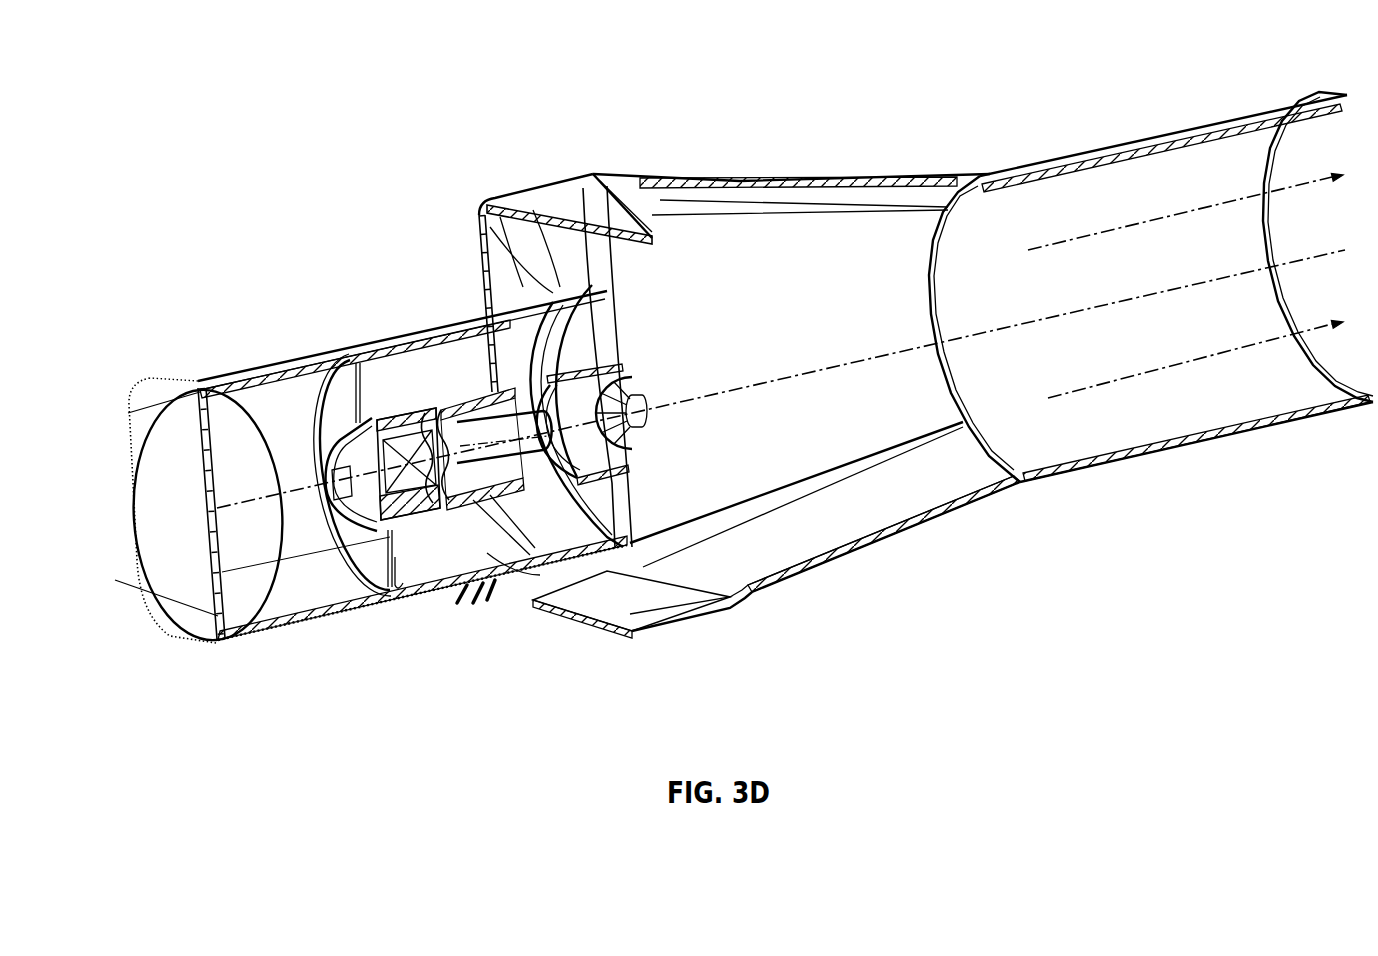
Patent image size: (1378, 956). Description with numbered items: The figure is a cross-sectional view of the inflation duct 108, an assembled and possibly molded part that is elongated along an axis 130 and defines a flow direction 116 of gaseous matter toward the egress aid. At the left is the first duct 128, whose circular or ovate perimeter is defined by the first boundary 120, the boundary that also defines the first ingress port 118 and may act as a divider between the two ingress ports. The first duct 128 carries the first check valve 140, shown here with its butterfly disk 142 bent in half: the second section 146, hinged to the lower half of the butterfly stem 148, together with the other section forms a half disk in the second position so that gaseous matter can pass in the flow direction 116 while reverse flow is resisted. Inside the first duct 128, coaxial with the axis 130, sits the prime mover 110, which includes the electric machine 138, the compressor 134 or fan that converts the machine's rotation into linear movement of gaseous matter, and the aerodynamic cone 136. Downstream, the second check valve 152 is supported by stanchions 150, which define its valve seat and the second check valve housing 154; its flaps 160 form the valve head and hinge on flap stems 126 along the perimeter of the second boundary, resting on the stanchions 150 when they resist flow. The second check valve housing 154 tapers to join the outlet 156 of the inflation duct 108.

The inflation duct 108 is at (727, 143).
The prime mover 110 is at (364, 315).
The flow direction 116 is at (1180, 213).
The first ingress port 118 is at (580, 358).
The first boundary 120 is at (545, 347).
The flap stems 126 is at (557, 217).
The first duct 128 is at (257, 270).
The axis 130 is at (1200, 283).
The compressor 134 is at (373, 560).
The aerodynamic cone 136 is at (347, 528).
The electric machine 138 is at (622, 487).
The first check valve 140 is at (157, 397).
The butterfly disk 142 is at (243, 613).
The second section 146 is at (237, 585).
The butterfly stem 148 is at (208, 527).
The stanchions 150 is at (500, 233).
The second check valve 152 is at (472, 218).
The second check valve housing 154 is at (515, 178).
The outlet 156 is at (1110, 147).
The flaps 160 is at (497, 265).